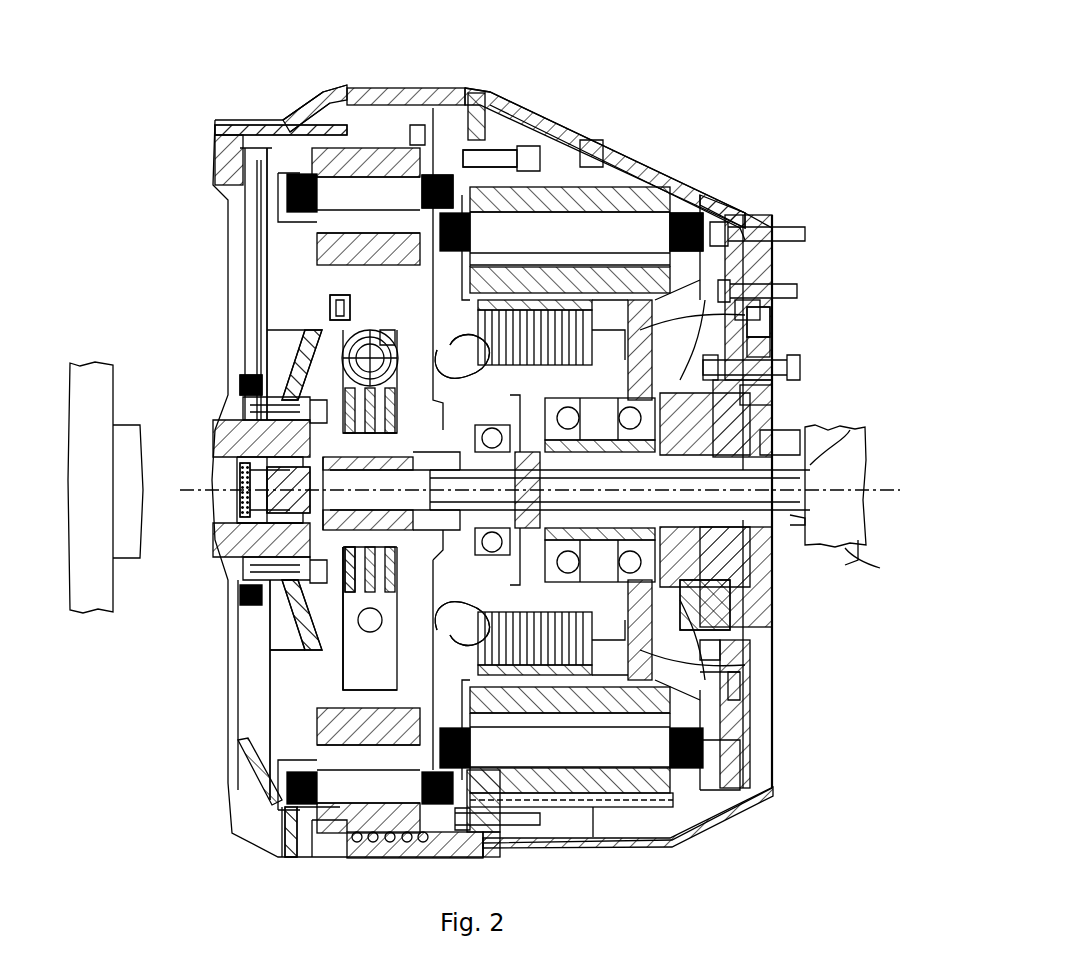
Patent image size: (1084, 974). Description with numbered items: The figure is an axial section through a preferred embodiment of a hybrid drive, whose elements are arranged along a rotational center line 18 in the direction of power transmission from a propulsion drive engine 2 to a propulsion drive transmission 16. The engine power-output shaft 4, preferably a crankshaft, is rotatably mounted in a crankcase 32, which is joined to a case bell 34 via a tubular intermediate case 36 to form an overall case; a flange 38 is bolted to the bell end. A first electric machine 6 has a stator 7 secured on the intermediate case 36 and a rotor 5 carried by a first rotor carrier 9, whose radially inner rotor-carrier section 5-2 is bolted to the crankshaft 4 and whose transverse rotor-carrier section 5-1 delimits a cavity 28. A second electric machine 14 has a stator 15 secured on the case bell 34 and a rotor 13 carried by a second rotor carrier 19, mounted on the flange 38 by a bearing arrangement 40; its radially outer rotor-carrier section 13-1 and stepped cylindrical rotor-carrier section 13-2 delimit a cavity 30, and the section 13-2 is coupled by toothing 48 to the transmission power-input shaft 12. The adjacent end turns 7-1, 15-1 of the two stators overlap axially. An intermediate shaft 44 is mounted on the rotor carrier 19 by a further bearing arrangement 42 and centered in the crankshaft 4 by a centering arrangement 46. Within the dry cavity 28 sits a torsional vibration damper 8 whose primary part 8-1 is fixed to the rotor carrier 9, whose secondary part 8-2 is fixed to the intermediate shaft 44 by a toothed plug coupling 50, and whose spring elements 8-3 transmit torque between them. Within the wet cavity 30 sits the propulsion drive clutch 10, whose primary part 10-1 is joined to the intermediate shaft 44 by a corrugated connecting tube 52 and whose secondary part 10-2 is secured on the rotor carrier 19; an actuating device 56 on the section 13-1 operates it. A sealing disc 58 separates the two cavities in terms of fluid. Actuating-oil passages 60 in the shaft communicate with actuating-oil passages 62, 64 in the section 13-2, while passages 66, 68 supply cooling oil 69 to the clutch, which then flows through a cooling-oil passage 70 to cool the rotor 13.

The propulsion drive engine 2 is at (95, 612).
The engine power-output shaft 4 is at (250, 400).
The rotor 5 is at (310, 250).
The rotor-carrier section 5-1 is at (330, 320).
The radially inner rotor-carrier section 5-2 is at (245, 362).
The first electric machine 6 is at (382, 185).
The stator 7 is at (330, 140).
The end turns 7-1 is at (440, 170).
The torsional vibration damper 8 is at (355, 605).
The primary part 8-1 is at (275, 342).
The secondary part 8-2 is at (340, 300).
The spring elements 8-3 is at (400, 330).
The first rotor carrier 9 is at (370, 680).
The propulsion drive clutch 10 is at (570, 340).
The primary part 10-1 is at (390, 660).
The secondary part 10-2 is at (725, 680).
The transmission power-input shaft 12 is at (760, 440).
The rotor 13 is at (750, 258).
The rotor-carrier section 13-1 is at (755, 287).
The stepped cylindrical rotor-carrier section 13-2 is at (745, 363).
The second electric machine 14 is at (575, 230).
The stator 15 is at (655, 195).
The end turns 15-1 is at (470, 200).
The propulsion drive transmission 16 is at (868, 570).
The rotational center line 18 is at (855, 470).
The second rotor carrier 19 is at (710, 650).
The cavity 28 is at (290, 750).
The cavity 30 is at (330, 720).
The crankcase 32 is at (215, 150).
The case bell 34 is at (735, 205).
The tubular intermediate case 36 is at (365, 95).
The flange 38 is at (745, 378).
The bearing arrangement 40 is at (750, 395).
The further bearing arrangement 42 is at (240, 442).
The intermediate shaft 44 is at (425, 477).
The centering arrangement 46 is at (238, 515).
The toothing 48 is at (425, 500).
The toothed plug coupling 50 is at (238, 545).
The connecting tube 52 is at (355, 652).
The actuating device 56 is at (740, 305).
The sealing disc 58 is at (355, 632).
The actuating-oil passages 60 is at (840, 440).
The actuating-oil passages 62 is at (505, 387).
The actuating-oil passages 64 is at (735, 347).
The cooling-oil passage 66 is at (800, 520).
The cooling-oil passage 68 is at (505, 592).
The cooling oil 69 is at (680, 620).
The cooling-oil passage 70 is at (715, 700).